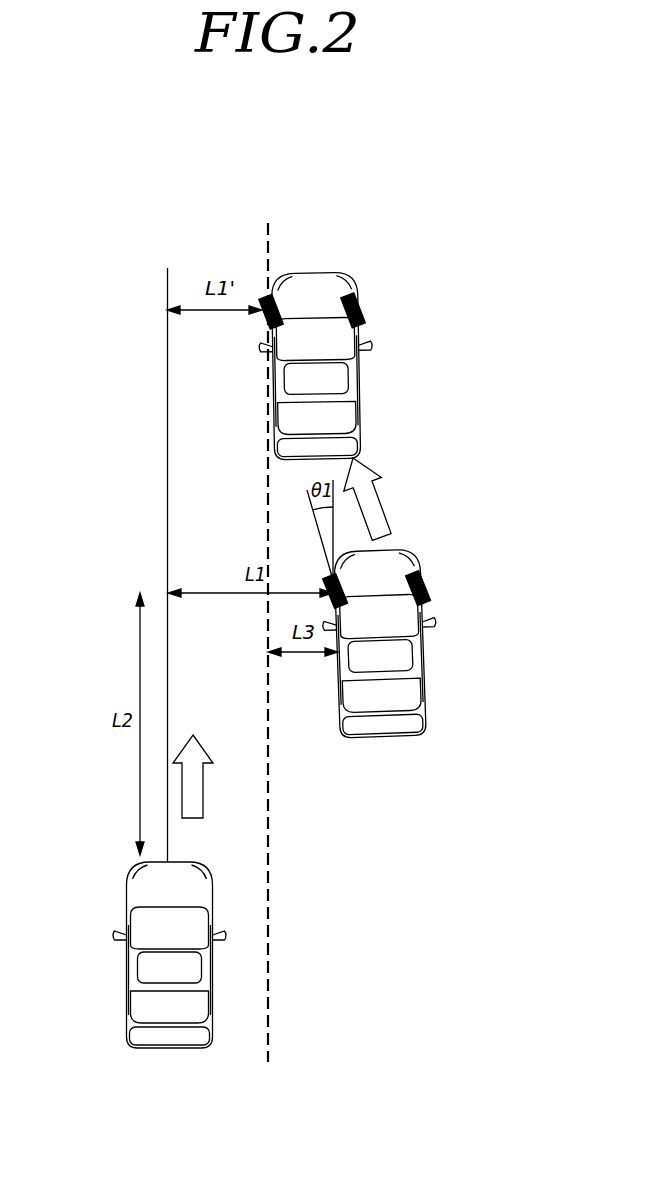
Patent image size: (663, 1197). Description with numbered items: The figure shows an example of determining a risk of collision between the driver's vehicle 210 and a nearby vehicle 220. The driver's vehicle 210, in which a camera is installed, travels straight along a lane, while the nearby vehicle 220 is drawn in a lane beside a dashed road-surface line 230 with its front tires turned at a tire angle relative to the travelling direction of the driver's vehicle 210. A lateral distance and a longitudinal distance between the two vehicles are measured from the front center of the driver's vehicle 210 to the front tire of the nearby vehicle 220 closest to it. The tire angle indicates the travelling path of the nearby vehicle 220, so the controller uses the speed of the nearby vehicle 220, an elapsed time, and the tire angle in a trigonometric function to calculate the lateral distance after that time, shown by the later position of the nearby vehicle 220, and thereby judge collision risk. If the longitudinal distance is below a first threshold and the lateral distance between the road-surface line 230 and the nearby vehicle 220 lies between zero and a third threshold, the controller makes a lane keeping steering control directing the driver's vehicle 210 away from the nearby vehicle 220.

The driver's vehicle 210 is at (127, 993).
The nearby vehicle 220 is at (423, 683).
The road-surface line 230 is at (268, 953).